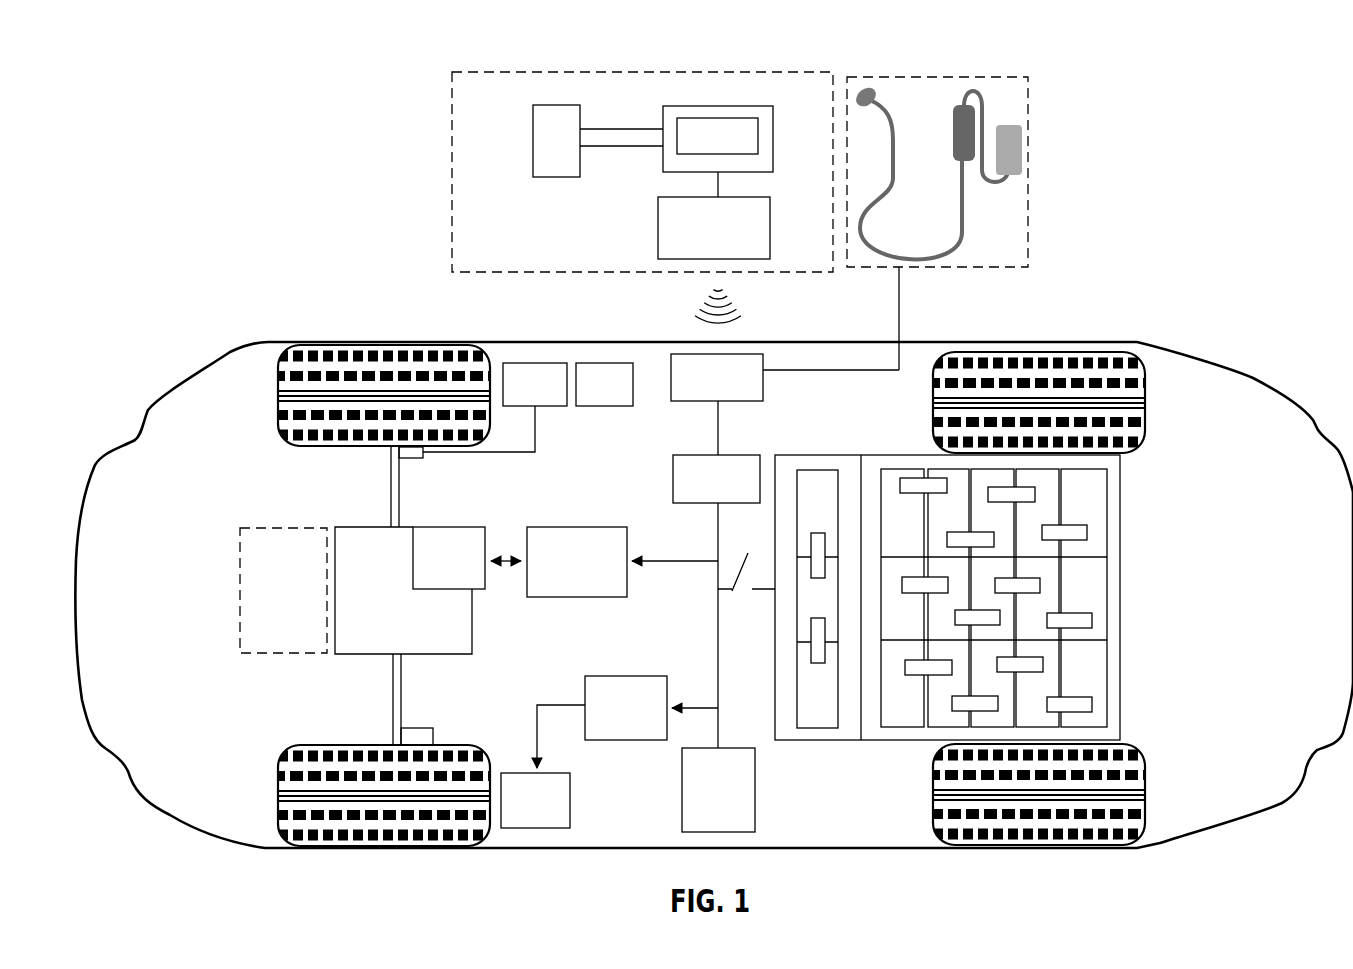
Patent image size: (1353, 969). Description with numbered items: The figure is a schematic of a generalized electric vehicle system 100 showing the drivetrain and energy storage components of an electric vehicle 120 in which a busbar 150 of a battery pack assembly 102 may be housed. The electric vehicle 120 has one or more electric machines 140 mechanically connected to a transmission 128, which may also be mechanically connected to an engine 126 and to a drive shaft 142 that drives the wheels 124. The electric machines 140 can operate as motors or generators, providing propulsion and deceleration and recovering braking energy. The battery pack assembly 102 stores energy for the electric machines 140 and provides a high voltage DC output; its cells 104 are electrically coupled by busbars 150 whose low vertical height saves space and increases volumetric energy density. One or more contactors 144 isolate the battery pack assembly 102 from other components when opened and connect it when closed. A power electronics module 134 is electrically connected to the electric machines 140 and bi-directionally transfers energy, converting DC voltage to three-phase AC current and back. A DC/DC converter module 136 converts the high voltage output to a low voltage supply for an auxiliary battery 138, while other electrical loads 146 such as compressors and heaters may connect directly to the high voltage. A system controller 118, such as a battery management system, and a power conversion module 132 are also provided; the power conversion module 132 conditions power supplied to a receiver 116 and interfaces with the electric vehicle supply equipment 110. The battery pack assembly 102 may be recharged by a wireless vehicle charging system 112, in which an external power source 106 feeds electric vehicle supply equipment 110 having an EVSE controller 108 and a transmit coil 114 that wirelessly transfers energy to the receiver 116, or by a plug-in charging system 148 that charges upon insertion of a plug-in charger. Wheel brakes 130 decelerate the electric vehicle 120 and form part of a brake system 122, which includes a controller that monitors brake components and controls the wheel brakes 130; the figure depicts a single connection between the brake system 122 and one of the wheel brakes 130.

The electric vehicle system 100 is at (1210, 68).
The battery pack assembly 102 is at (989, 596).
The cells 104 is at (1090, 673).
The external power source 106 is at (533, 128).
The EVSE controller 108 is at (677, 122).
The electric vehicle supply equipment 110 is at (773, 137).
The wireless vehicle charging system 112 is at (675, 72).
The transmit coil 114 is at (658, 213).
The receiver 116 is at (671, 372).
The system controller 118 is at (600, 363).
The electric vehicle 120 is at (1220, 387).
The brake system 122 is at (530, 363).
The wheel 124 is at (280, 360).
The engine 126 is at (263, 528).
The transmission 128 is at (365, 527).
The wheel brakes 130 is at (423, 458).
The power conversion module 132 is at (673, 472).
The power electronics module 134 is at (555, 527).
The DC/DC converter module 136 is at (585, 676).
The auxiliary battery 138 is at (501, 773).
The electric machines 140 is at (487, 527).
The drive shaft 142 is at (393, 705).
The contactors 144 is at (738, 571).
The electrical loads 146 is at (682, 792).
The plug-in charging system 148 is at (993, 77).
The busbar 150 is at (1073, 535).